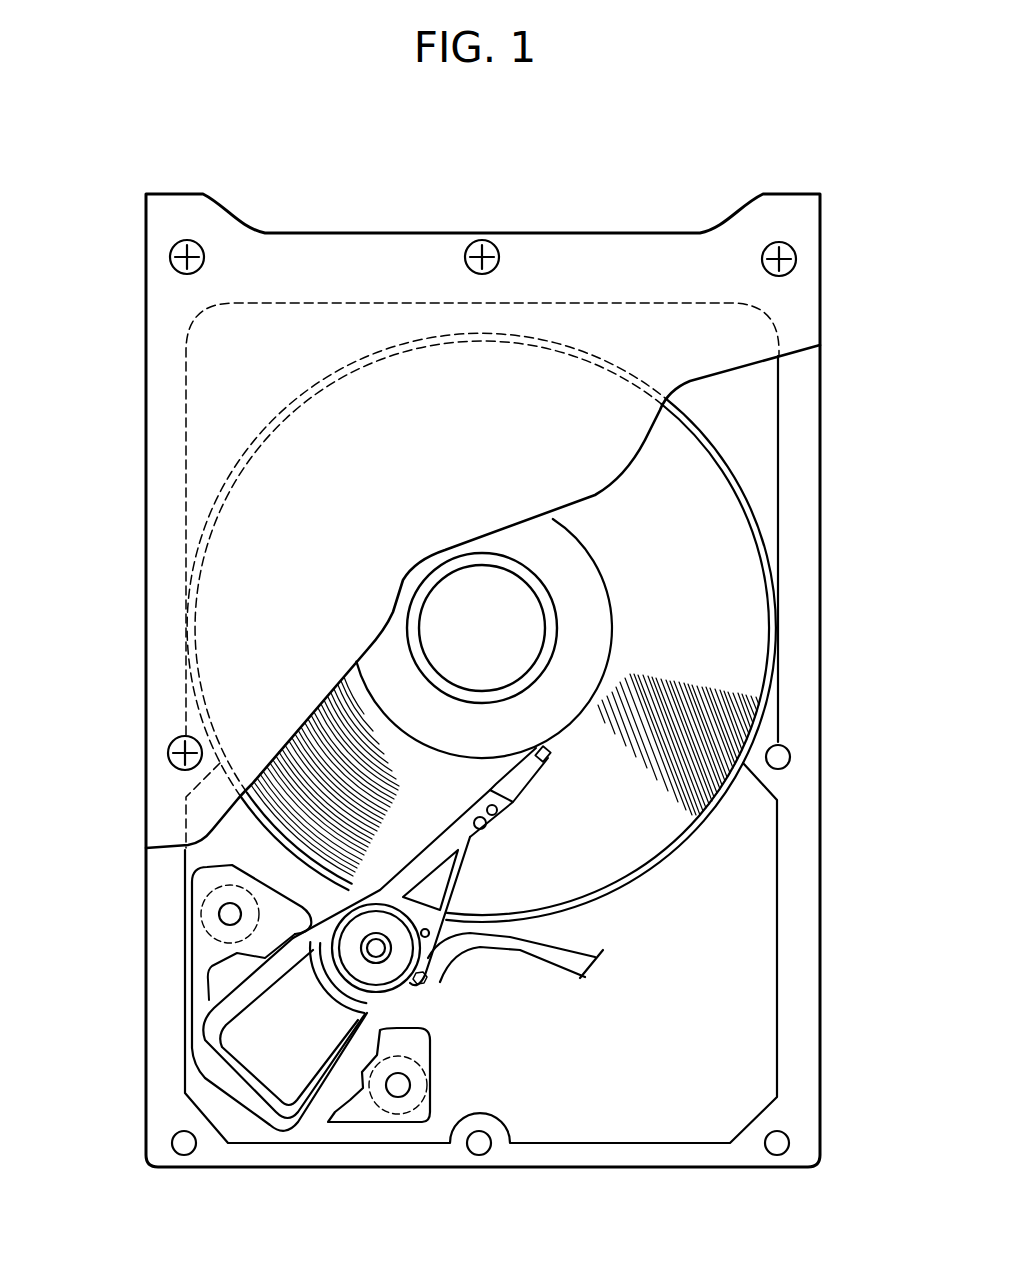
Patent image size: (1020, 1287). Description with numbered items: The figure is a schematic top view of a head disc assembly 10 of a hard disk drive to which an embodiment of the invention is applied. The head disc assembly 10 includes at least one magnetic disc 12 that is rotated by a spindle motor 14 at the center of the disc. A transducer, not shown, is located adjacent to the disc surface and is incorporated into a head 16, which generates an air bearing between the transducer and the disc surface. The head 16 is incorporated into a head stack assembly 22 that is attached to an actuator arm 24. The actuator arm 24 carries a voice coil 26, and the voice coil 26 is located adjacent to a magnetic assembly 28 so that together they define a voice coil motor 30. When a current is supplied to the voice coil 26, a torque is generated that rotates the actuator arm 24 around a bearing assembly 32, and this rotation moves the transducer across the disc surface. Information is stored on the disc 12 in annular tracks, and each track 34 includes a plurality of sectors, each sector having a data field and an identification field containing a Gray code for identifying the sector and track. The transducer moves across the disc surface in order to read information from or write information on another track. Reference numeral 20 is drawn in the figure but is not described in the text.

The head disc assembly 10 is at (820, 170).
The magnetic disc 12 is at (731, 564).
The spindle motor 14 is at (458, 605).
The head 16 is at (545, 762).
The suspension 20 is at (507, 800).
The head stack assembly 22 is at (472, 885).
The actuator arm 24 is at (287, 965).
The voice coil 26 is at (227, 1033).
The magnetic assembly 28 is at (232, 979).
The voice coil motor 30 is at (347, 1103).
The bearing assembly 32 is at (388, 962).
The track 34 is at (342, 747).